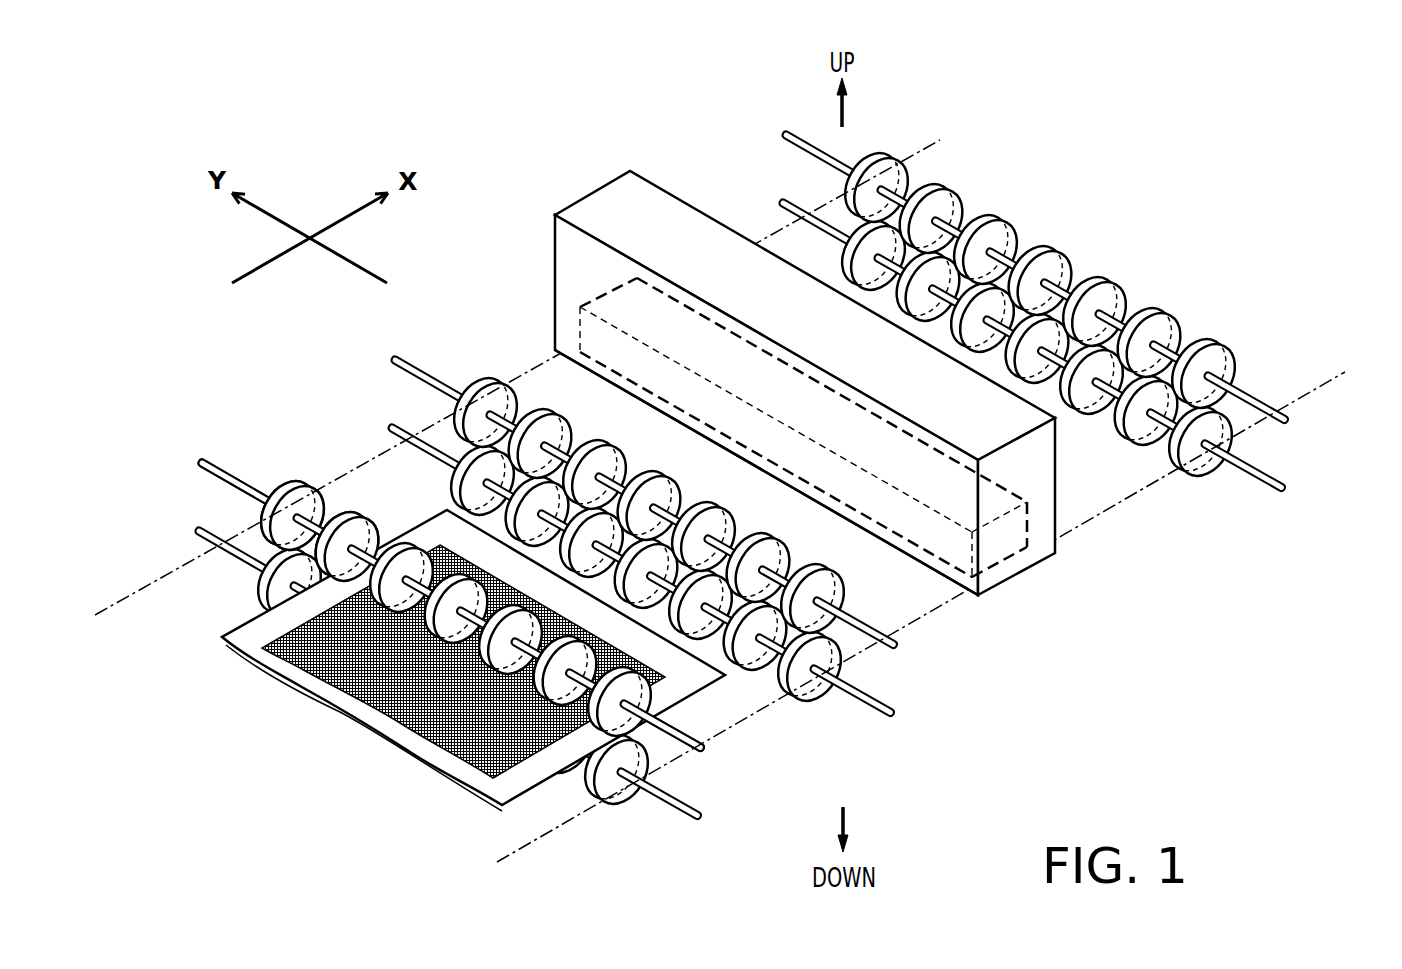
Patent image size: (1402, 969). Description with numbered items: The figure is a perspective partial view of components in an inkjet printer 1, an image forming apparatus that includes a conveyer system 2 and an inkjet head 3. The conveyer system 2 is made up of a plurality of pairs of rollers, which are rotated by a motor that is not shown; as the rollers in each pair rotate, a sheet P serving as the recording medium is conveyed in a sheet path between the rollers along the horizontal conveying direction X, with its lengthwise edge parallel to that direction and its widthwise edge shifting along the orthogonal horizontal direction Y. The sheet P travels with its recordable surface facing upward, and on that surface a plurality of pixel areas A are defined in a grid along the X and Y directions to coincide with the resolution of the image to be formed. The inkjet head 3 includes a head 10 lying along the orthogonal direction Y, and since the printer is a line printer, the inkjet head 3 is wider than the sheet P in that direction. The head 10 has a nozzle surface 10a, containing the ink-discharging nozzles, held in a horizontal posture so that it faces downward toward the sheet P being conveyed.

The inkjet printer 1 is at (743, 502).
The conveyer system 2 is at (733, 805).
The inkjet head 3 is at (1033, 457).
The head 10 is at (1007, 540).
The nozzle surface 10a is at (935, 565).
The sheet P is at (687, 677).
The pixel areas A is at (512, 770).